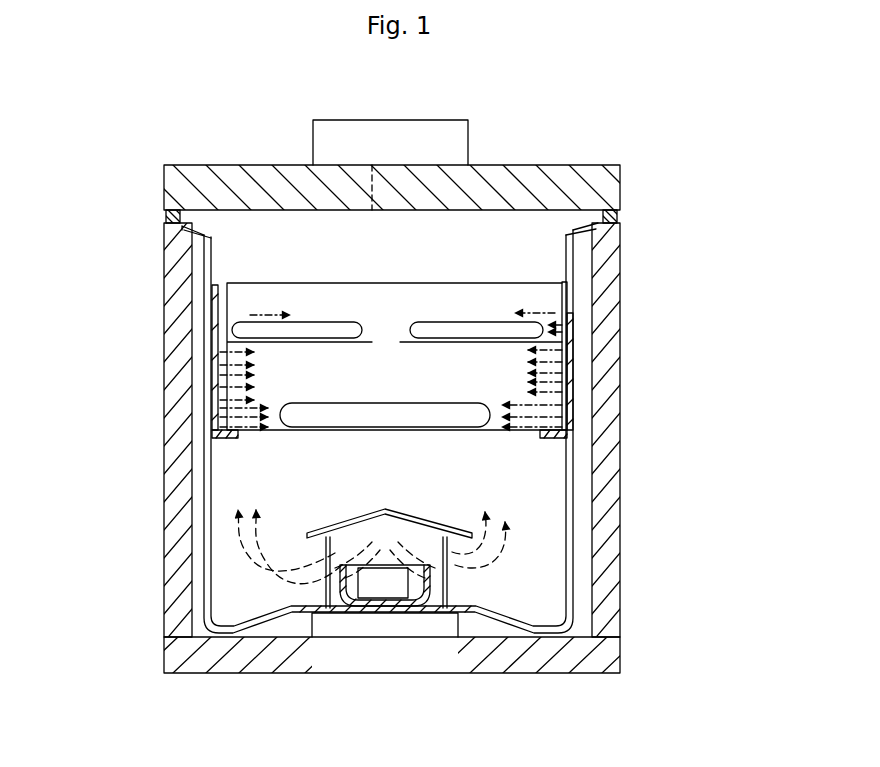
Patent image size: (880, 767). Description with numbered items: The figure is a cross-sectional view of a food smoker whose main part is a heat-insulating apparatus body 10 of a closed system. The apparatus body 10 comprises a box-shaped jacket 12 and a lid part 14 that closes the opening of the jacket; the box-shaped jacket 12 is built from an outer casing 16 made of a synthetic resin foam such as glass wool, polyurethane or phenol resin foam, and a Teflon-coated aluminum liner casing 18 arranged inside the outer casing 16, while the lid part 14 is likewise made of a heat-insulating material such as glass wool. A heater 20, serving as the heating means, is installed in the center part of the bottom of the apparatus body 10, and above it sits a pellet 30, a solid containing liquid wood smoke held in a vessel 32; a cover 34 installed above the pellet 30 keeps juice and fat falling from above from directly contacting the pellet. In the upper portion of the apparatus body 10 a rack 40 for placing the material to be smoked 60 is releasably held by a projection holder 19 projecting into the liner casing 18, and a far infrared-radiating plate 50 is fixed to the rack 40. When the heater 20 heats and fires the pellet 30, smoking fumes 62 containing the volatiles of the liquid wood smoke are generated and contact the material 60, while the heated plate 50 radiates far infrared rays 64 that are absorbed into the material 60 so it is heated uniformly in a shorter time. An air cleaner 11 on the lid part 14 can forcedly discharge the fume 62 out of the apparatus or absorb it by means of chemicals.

The apparatus body 10 is at (162, 346).
The air cleaner 11 is at (403, 132).
The box-shaped jacket 12 is at (162, 390).
The lid part 14 is at (548, 168).
The outer casing 16 is at (170, 447).
The liner casing 18 is at (205, 527).
The projection holder 19 is at (232, 440).
The heater 20 is at (400, 633).
The pellet 30 is at (367, 585).
The vessel 32 is at (433, 583).
The cover 34 is at (417, 515).
The rack 40 is at (527, 428).
The far infrared-radiating plate 50 is at (210, 295).
The material to be smoked 60 is at (377, 410).
The fume 62 is at (503, 523).
The far infrared rays 64 is at (270, 300).